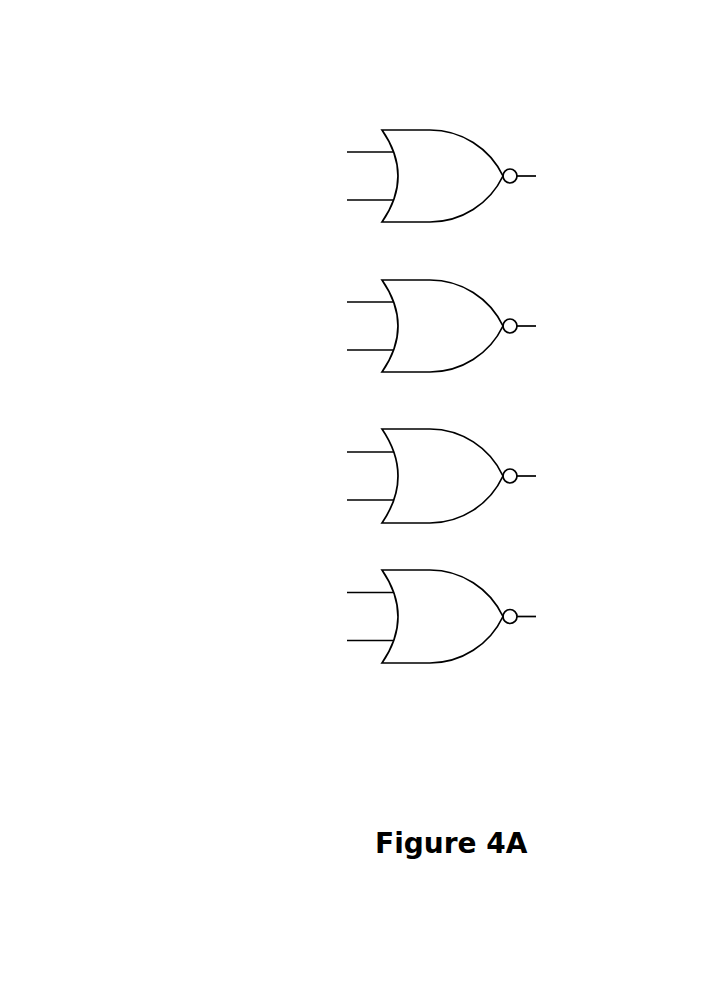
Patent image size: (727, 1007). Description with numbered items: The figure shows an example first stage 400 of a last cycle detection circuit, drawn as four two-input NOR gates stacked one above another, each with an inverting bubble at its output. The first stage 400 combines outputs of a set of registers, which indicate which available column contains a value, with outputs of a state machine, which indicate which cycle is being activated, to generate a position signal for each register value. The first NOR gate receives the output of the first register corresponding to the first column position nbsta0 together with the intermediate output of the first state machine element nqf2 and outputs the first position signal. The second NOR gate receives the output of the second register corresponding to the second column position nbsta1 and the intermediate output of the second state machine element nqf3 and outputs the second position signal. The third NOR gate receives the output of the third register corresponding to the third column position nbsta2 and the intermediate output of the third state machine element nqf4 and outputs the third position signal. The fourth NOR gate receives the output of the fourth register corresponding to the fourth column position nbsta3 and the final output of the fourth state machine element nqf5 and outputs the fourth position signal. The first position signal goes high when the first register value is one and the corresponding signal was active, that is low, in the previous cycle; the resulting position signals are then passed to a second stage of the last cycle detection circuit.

The first stage 400 is at (118, 109).
The output of the first register nbsta0 is at (318, 153).
The intermediate output of the first state machine element nqf2 is at (328, 200).
The output of the second register nbsta1 is at (315, 303).
The intermediate output of the second state machine element nqf3 is at (325, 350).
The output of the third register nbsta2 is at (317, 450).
The intermediate output of the third state machine element nqf4 is at (328, 497).
The output of the fourth register nbsta3 is at (323, 593).
The final output of the fourth state machine element nqf5 is at (333, 640).